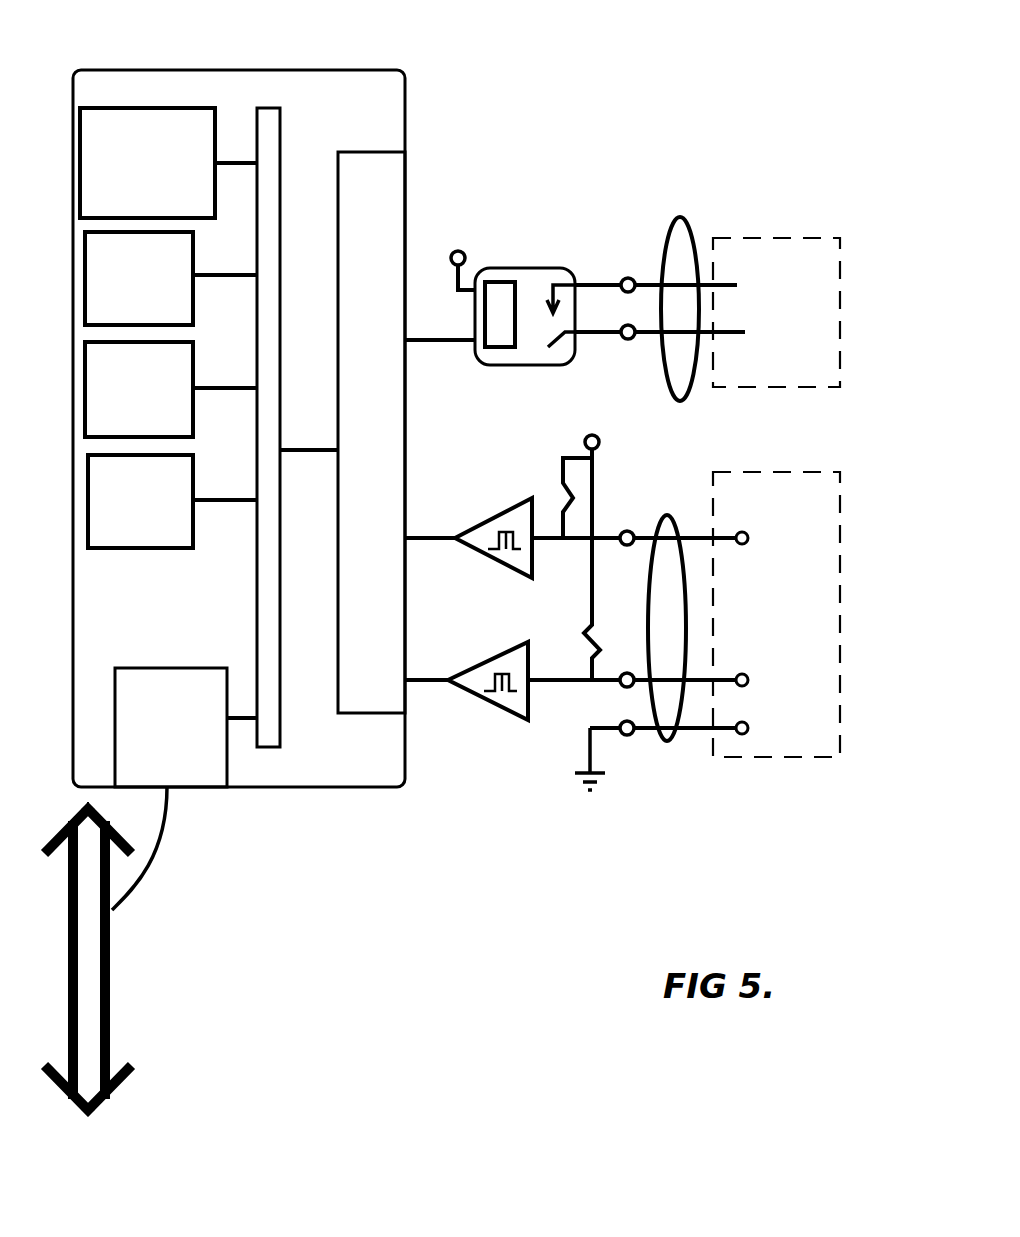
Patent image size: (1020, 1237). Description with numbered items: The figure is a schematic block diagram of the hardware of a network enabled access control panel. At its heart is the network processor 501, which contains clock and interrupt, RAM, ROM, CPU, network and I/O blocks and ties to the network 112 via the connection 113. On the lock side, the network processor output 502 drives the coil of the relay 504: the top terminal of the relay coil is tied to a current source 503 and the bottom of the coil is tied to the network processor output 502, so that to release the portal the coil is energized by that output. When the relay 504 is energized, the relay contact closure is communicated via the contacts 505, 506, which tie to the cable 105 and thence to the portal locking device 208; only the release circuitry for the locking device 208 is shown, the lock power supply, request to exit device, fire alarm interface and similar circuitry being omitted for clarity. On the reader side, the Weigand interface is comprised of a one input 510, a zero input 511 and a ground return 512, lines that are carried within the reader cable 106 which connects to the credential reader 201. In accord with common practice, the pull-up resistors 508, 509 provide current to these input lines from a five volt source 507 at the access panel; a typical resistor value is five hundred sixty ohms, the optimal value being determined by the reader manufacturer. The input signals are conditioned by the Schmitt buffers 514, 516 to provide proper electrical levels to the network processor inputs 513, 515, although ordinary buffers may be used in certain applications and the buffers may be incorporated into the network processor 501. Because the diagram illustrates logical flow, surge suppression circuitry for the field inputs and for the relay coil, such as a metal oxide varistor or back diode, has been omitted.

The network processor 501 is at (228, 58).
The network processor output 502 is at (424, 342).
The current source 503 is at (451, 254).
The relay 504 is at (500, 258).
The relay contact 505 is at (622, 279).
The relay contact 506 is at (626, 340).
The cable 105 is at (681, 401).
The portal locking device 208 is at (742, 388).
The 5 volt source 507 is at (591, 434).
The pull-up resistor 508 is at (556, 491).
The pull-up resistor 509 is at (580, 636).
The "1" input 510 is at (628, 531).
The "0" input 511 is at (624, 689).
The ground return 512 is at (627, 737).
The network processor input 513 is at (437, 538).
The Schmitt buffer 514 is at (506, 568).
The network processor input 515 is at (437, 680).
The Schmitt buffer 516 is at (506, 712).
The reader cable 106 is at (674, 520).
The credential reader 201 is at (742, 757).
The connection 113 is at (167, 805).
The network 112 is at (110, 1007).